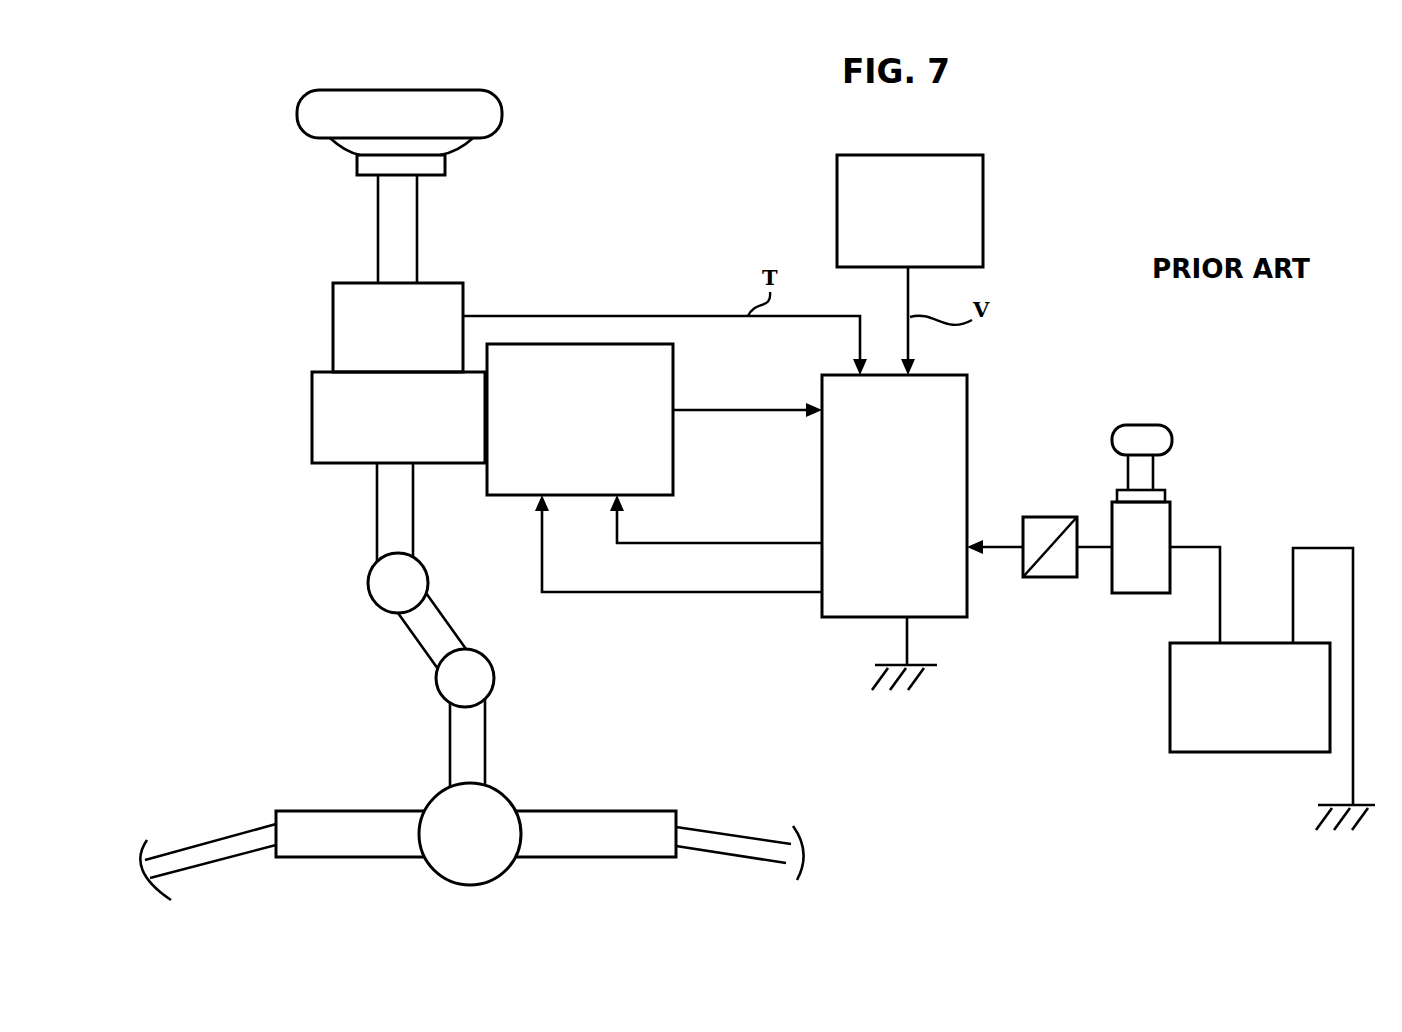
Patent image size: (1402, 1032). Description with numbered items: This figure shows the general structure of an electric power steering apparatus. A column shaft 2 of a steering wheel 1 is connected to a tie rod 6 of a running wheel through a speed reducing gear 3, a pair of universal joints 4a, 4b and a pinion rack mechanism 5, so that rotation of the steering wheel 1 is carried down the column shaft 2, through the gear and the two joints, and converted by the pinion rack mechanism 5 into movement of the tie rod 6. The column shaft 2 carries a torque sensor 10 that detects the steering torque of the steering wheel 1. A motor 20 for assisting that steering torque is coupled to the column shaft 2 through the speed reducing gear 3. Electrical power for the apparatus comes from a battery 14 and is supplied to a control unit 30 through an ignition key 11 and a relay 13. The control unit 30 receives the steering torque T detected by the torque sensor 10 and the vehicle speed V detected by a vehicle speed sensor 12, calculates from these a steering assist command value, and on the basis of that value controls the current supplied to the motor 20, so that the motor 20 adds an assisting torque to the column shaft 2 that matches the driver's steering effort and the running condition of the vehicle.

The steering wheel 1 is at (502, 106).
The column shaft 2 is at (378, 232).
The speed reducing gear 3 is at (312, 435).
The universal joint 4a is at (368, 593).
The universal joint 4b is at (440, 698).
The pinion rack mechanism 5 is at (514, 799).
The tie rod 6 is at (742, 838).
The torque sensor 10 is at (333, 333).
The ignition key 11 is at (1172, 442).
The vehicle speed sensor 12 is at (983, 200).
The relay 13 is at (1052, 577).
The battery 14 is at (1213, 752).
The motor 20 is at (620, 343).
The control unit 30 is at (967, 407).